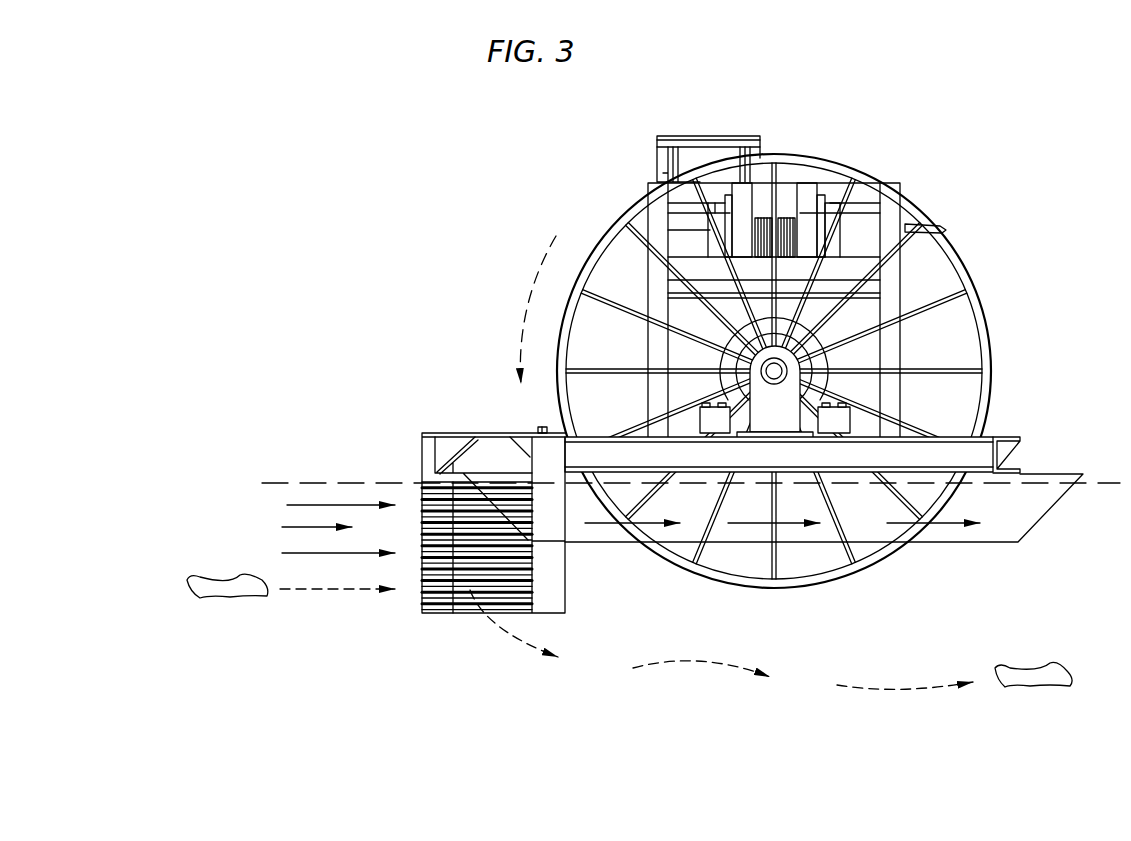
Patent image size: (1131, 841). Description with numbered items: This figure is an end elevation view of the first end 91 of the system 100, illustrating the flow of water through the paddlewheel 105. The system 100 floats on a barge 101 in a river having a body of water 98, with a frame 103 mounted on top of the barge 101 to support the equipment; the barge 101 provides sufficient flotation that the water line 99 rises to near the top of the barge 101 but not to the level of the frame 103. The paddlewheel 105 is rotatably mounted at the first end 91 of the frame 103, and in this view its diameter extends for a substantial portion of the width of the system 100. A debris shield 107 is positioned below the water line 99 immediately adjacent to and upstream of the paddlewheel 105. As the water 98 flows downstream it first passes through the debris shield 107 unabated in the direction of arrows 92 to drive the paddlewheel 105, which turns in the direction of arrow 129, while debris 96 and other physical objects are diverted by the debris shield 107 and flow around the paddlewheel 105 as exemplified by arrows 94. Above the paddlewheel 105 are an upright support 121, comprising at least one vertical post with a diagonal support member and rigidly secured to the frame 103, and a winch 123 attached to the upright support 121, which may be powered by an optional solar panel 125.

The system 100 is at (636, 121).
The first end 91 is at (950, 447).
The arrows 92 is at (292, 553).
The arrows 94 is at (315, 590).
The debris 96 is at (200, 593).
The water 98 is at (374, 712).
The water line 99 is at (297, 482).
The floating barge 101 is at (1057, 474).
The frame 103 is at (1007, 430).
The paddlewheel 105 is at (952, 257).
The debris shield 107 is at (430, 628).
The upright supports 121 is at (645, 183).
The winch 123 is at (805, 188).
The solar panel 125 is at (704, 136).
The arrow 129 is at (535, 296).